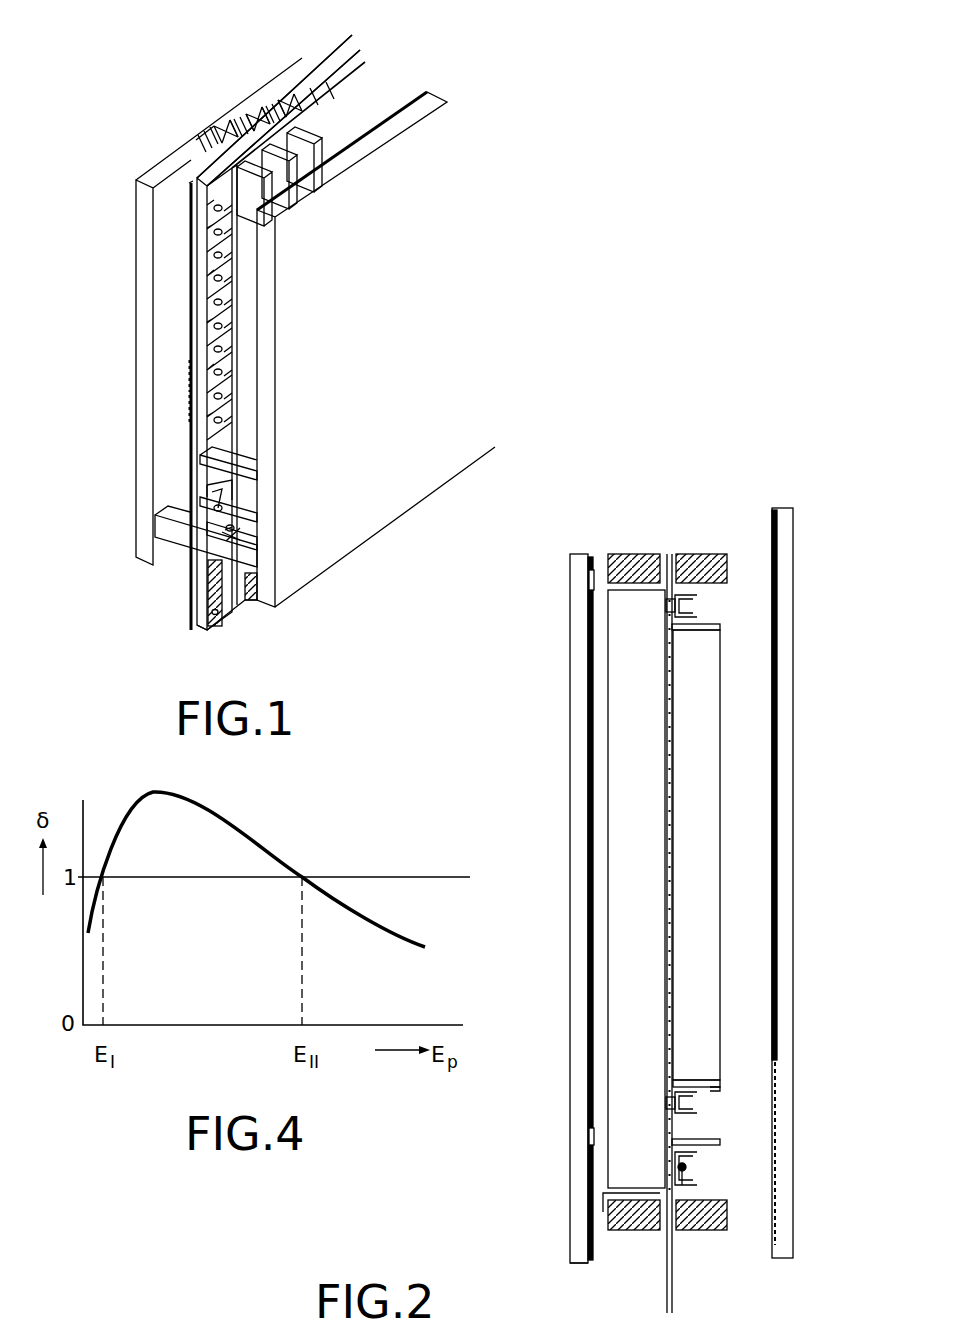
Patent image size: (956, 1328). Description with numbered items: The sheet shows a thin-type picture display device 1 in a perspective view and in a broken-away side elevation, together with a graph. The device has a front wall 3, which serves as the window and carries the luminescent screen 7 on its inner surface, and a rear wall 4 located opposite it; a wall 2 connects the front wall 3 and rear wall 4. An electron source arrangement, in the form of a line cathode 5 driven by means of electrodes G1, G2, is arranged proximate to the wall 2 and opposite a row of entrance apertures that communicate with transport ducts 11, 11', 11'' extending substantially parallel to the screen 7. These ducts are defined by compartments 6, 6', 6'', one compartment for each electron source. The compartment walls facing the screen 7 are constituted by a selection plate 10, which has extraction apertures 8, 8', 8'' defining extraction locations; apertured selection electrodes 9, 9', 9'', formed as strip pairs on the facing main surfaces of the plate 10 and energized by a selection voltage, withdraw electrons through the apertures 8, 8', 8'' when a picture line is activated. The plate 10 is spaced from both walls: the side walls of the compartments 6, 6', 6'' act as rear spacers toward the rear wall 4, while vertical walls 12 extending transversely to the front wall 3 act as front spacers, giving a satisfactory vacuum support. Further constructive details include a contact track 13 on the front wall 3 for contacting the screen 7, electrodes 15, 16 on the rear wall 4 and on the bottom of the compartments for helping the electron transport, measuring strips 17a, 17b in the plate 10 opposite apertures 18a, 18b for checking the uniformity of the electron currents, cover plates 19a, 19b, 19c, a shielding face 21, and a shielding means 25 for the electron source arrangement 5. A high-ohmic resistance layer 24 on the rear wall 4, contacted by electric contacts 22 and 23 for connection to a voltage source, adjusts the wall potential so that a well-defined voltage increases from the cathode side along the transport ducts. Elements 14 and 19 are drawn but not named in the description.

In FIG. 1, the picture display device 1 is at (184, 83).
In FIG. 1, the wall 2 is at (190, 548).
In FIG. 2, the wall 2 is at (707, 1222).
In FIG. 1, the front wall 3 is at (447, 96).
In FIG. 2, the front wall 3 is at (785, 520).
In FIG. 1, the rear wall 4 is at (143, 201).
In FIG. 2, the rear wall 4 is at (576, 871).
In FIG. 1, the line cathode 5 is at (258, 542).
In FIG. 2, the line cathode 5 is at (688, 1225).
In FIG. 1, the compartment 6 is at (253, 332).
In FIG. 2, the compartment 6 is at (597, 889).
In FIG. 1, the compartment 6' is at (225, 105).
In FIG. 1, the compartment 6'' is at (273, 86).
In FIG. 1, the luminescent screen 7 is at (262, 269).
In FIG. 2, the luminescent screen 7 is at (778, 672).
In FIG. 1, the extraction aperture 8 is at (257, 397).
In FIG. 2, the extraction aperture 8 is at (647, 1079).
In FIG. 1, the extraction aperture 8' is at (279, 392).
In FIG. 2, the extraction aperture 8' is at (647, 1046).
In FIG. 1, the extraction aperture 8'' is at (270, 368).
In FIG. 2, the extraction aperture 8'' is at (647, 1012).
In FIG. 1, the selection electrode 9 is at (149, 405).
In FIG. 1, the selection electrode 9' is at (149, 424).
In FIG. 1, the selection electrode 9'' is at (149, 373).
In FIG. 1, the selection plate 10 is at (368, 56).
In FIG. 2, the selection plate 10 is at (672, 762).
In FIG. 1, the transport duct 11 is at (195, 113).
In FIG. 1, the transport duct 11' is at (247, 86).
In FIG. 1, the transport duct 11'' is at (307, 71).
In FIG. 1, the vertical wall 12 is at (288, 182).
In FIG. 2, the vertical wall 12 is at (700, 830).
In FIG. 2, the contact track 13 is at (771, 520).
In FIG. 2, the lower insulating block 14 is at (645, 1222).
In FIG. 2, the electrode 15 is at (588, 1228).
In FIG. 2, the electrode 16 is at (625, 1202).
In FIG. 2, the measuring strip 17a is at (697, 1105).
In FIG. 2, the measuring strip 17b is at (697, 604).
In FIG. 2, the aperture 18a is at (668, 1102).
In FIG. 2, the aperture 18b is at (668, 605).
In FIG. 1, the support beam 19 is at (168, 528).
In FIG. 1, the cover plate 19a is at (245, 509).
In FIG. 2, the cover plate 19a is at (720, 1143).
In FIG. 1, the cover plate 19b is at (250, 468).
In FIG. 2, the cover plate 19b is at (715, 1088).
In FIG. 2, the cover plate 19c is at (715, 625).
In FIG. 2, the shielding face 21 is at (777, 1130).
In FIG. 2, the electric contact 22 is at (590, 1138).
In FIG. 2, the electric contact 23 is at (590, 580).
In FIG. 2, the resistance layer 24 is at (588, 812).
In FIG. 2, the shielding means 25 is at (697, 1176).
In FIG. 1, the electrode G1 is at (216, 622).
In FIG. 1, the electrode G2 is at (254, 600).